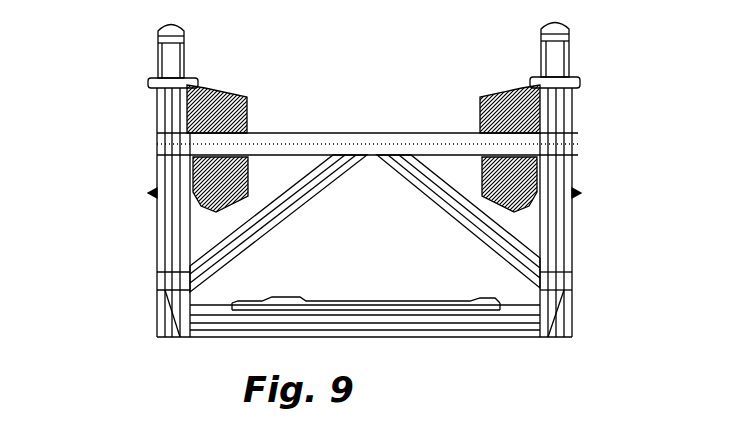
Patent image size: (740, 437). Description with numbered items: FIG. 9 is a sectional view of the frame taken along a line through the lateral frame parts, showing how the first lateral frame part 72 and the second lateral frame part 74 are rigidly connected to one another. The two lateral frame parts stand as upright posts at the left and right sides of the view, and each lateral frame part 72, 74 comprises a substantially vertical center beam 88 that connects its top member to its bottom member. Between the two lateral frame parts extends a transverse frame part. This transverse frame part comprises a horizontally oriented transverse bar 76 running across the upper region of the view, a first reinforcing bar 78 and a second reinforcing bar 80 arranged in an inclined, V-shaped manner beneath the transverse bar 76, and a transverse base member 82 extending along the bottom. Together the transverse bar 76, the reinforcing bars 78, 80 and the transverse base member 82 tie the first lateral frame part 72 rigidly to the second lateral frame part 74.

The first lateral frame part 72 is at (603, 134).
The second lateral frame part 74 is at (128, 123).
The transverse bar 76 is at (365, 142).
The first reinforcing bar 78 is at (433, 202).
The second reinforcing bar 80 is at (300, 196).
The transverse base member 82 is at (430, 317).
The center beam 88 is at (558, 210).